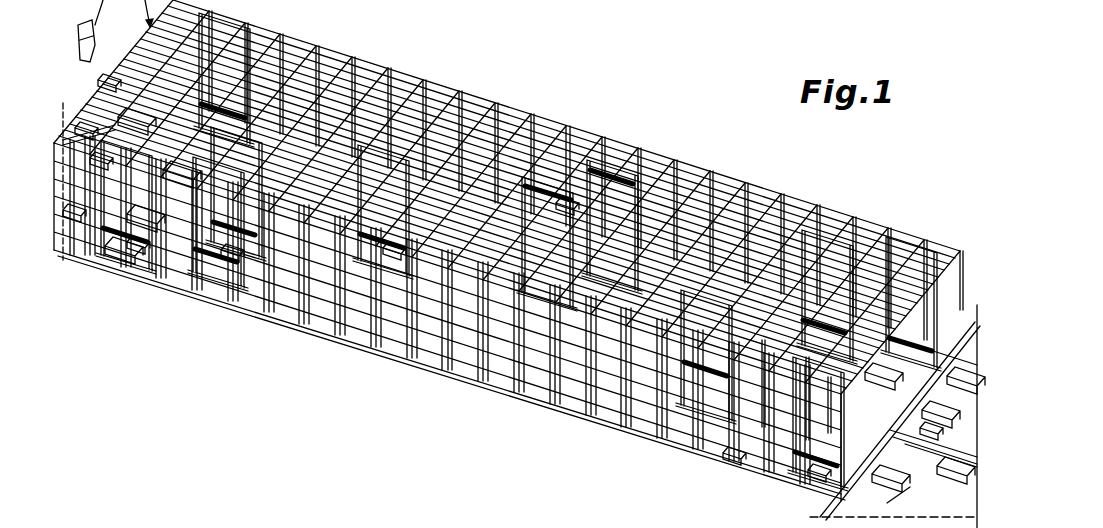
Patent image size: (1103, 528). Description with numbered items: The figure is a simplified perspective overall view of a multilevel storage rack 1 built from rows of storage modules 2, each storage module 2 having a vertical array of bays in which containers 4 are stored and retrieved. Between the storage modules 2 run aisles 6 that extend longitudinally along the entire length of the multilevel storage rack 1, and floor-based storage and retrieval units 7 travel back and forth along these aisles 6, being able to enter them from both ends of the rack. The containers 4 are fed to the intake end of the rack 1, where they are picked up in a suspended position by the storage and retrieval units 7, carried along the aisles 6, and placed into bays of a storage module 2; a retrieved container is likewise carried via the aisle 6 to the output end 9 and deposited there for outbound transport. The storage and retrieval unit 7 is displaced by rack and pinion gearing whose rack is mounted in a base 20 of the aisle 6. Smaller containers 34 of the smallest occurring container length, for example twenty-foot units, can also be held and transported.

The multilevel storage rack 1 is at (490, 78).
The storage modules 2 is at (583, 424).
The containers 4 is at (527, 187).
The aisles 6 is at (246, 286).
The storage and retrieval units 7 is at (390, 148).
The output end 9 is at (968, 268).
The base of the aisle 20 is at (178, 272).
The containers having the smallest occurring container length 34 is at (730, 468).